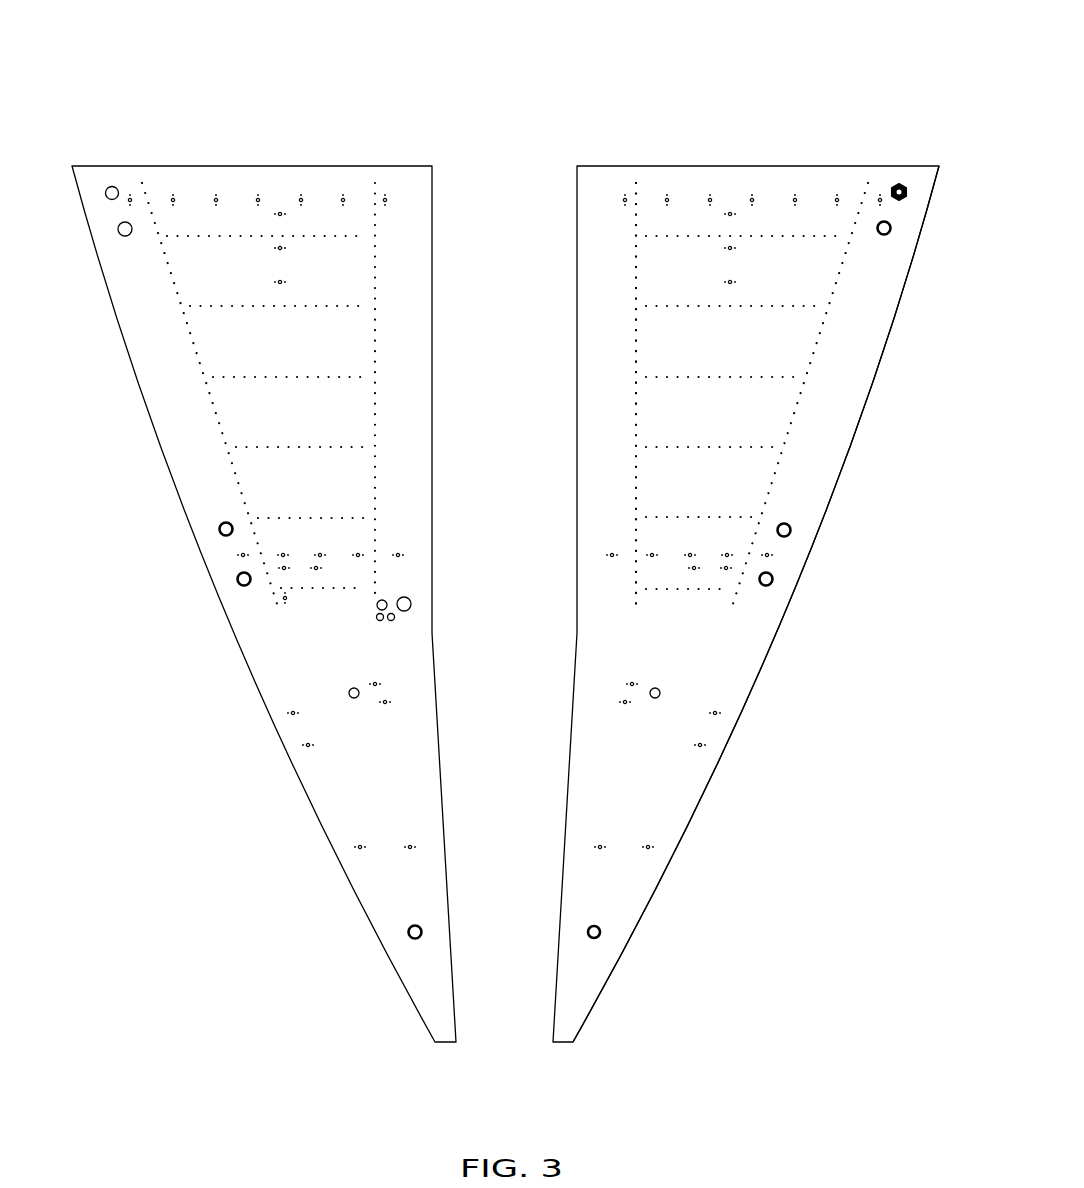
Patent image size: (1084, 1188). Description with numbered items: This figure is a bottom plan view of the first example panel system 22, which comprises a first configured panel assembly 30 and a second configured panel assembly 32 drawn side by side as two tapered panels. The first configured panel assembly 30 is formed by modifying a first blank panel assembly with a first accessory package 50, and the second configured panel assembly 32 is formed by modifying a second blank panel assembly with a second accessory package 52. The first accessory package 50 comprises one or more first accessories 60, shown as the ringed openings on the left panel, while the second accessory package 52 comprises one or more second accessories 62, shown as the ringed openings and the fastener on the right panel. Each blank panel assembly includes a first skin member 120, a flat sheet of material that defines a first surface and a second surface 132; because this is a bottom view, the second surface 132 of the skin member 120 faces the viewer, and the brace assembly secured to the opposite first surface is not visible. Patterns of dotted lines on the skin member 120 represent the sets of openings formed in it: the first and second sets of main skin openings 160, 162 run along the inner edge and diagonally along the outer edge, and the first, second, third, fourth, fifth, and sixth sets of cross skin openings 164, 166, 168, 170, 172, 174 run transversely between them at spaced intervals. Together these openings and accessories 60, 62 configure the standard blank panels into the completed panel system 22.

The first panel system 22 is at (514, 64).
The first configured panel assembly 30 is at (254, 110).
The second configured panel assembly 32 is at (751, 110).
The first accessory package 50 is at (186, 658).
The second accessory package 52 is at (835, 655).
The first accessories 60 is at (110, 199).
The second accessories 62 is at (899, 183).
The first skin member 120 is at (406, 478).
The second surface 132 is at (684, 800).
The first set of main skin openings 160 is at (632, 274).
The second set of main skin openings 162 is at (845, 275).
The first set of cross skin openings 164 is at (764, 236).
The second set of cross skin openings 166 is at (714, 307).
The third set of cross skin openings 168 is at (688, 377).
The fourth set of cross skin openings 170 is at (668, 447).
The fifth set of cross skin openings 172 is at (658, 518).
The sixth set of cross skin openings 174 is at (660, 589).